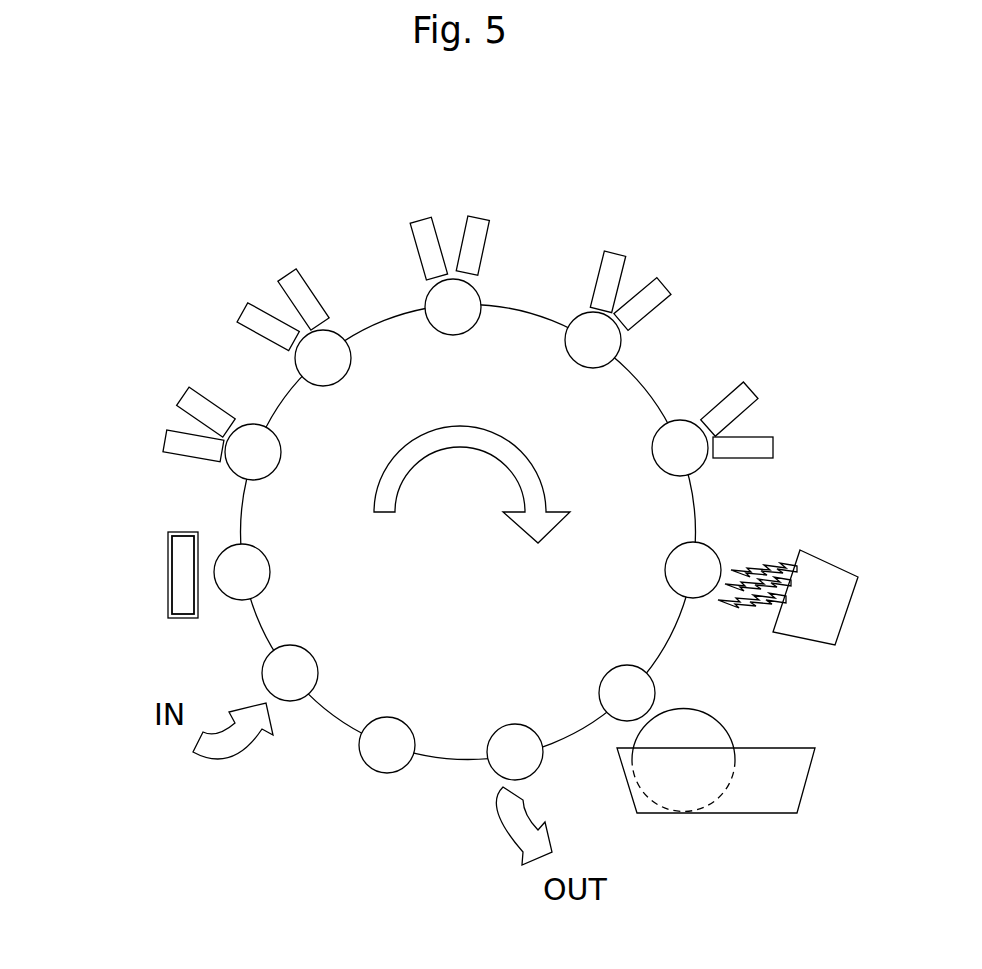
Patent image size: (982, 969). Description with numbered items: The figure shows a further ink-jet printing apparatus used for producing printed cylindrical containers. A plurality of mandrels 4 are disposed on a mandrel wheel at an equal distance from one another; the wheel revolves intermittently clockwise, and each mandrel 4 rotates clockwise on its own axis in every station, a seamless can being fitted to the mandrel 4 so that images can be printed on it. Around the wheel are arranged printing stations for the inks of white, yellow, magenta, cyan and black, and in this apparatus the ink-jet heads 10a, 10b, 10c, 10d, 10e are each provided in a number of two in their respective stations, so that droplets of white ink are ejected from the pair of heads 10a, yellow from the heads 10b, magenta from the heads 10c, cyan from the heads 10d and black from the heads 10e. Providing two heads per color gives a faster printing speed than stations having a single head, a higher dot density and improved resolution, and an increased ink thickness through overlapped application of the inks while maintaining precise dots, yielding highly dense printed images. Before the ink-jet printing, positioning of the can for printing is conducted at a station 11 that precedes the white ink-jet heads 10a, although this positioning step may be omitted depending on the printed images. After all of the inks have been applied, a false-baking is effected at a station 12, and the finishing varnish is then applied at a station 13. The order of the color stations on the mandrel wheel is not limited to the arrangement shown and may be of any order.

The mandrel 4 is at (366, 773).
The ink-jet head 10a is at (183, 396).
The ink-jet head 10b is at (283, 272).
The ink-jet head 10c is at (406, 222).
The ink-jet head 10d is at (612, 252).
The ink-jet head 10e is at (753, 390).
The station 11 is at (168, 571).
The station 12 is at (827, 548).
The station 13 is at (763, 739).